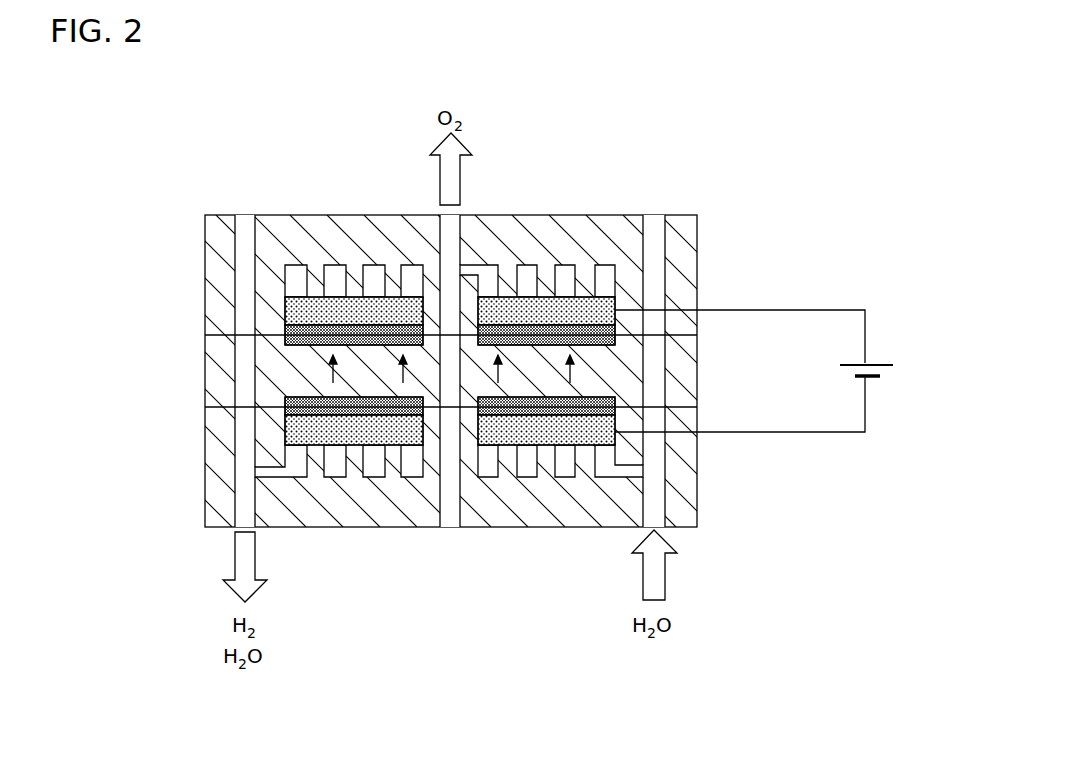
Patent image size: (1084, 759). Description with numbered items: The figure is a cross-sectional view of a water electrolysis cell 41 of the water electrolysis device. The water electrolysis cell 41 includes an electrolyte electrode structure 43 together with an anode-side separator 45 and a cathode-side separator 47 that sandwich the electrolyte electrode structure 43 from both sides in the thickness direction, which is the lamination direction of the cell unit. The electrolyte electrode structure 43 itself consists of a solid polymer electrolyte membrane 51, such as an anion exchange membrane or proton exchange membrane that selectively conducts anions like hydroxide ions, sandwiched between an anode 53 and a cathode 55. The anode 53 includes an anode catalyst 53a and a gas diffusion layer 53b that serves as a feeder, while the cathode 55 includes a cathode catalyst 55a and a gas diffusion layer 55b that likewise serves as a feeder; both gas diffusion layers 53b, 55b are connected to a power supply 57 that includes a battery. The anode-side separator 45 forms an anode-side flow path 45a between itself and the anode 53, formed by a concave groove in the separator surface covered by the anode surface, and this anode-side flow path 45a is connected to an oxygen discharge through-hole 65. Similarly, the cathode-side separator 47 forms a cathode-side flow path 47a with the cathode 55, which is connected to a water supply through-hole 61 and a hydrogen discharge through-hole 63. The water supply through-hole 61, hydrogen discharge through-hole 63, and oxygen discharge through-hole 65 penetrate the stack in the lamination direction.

The water electrolysis cell 41 is at (700, 170).
The electrolyte electrode structure 43 is at (474, 371).
The anode-side separator 45 is at (526, 222).
The anode-side flow path 45a is at (527, 281).
The cathode-side separator 47 is at (511, 524).
The cathode-side flow path 47a is at (492, 462).
The solid polymer electrolyte membrane 51 is at (672, 372).
The anode 53 is at (446, 321).
The anode catalyst 53a is at (298, 343).
The gas diffusion layer 53b is at (303, 310).
The cathode 55 is at (446, 422).
The cathode catalyst 55a is at (303, 398).
The gas diffusion layer 55b is at (298, 428).
The power supply 57 is at (878, 362).
The water supply through-hole 61 is at (648, 232).
The hydrogen discharge through-hole 63 is at (237, 238).
The oxygen discharge through-hole 65 is at (452, 526).